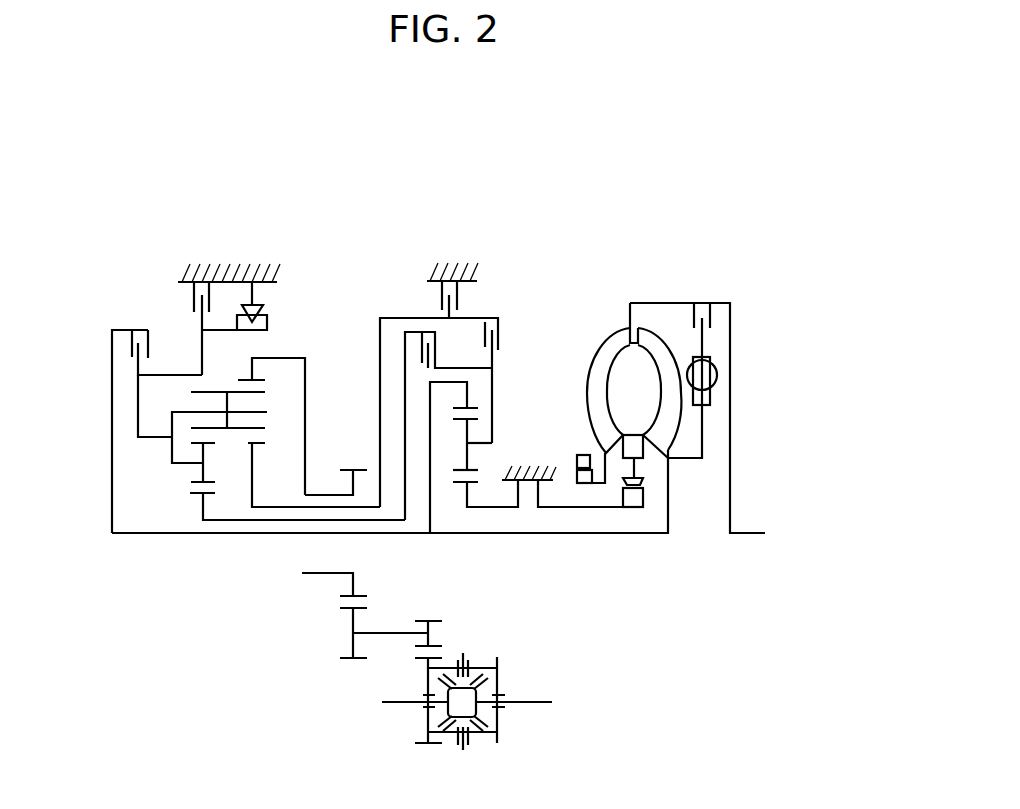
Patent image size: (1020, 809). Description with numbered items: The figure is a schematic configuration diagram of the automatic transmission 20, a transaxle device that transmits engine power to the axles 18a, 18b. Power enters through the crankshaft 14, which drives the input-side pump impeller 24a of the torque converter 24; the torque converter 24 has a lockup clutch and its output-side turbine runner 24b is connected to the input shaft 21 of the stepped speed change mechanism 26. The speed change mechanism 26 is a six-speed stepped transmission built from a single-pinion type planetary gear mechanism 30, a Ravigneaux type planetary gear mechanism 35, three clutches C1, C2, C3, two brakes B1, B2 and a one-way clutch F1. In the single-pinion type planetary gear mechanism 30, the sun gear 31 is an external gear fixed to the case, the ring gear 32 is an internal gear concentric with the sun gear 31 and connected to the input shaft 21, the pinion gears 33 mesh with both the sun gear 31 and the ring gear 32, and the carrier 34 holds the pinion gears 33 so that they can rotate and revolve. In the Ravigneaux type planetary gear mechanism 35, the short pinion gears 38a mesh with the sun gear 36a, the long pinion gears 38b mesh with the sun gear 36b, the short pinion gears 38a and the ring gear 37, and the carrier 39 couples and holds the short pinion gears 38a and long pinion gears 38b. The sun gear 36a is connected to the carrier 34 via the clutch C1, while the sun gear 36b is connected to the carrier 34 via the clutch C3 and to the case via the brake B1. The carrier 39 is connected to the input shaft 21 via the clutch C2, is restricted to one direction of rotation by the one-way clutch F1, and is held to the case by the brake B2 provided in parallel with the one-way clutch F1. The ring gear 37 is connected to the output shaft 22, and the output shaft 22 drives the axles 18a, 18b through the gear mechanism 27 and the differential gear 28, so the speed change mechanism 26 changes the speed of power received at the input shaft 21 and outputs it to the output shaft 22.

The automatic transmission 20 is at (740, 220).
The crankshaft 14 is at (755, 530).
The torque converter 24 is at (624, 264).
The pump impeller 24a is at (612, 328).
The turbine runner 24b is at (642, 327).
The input shaft 21 is at (635, 535).
The speed change mechanism 26 is at (411, 219).
The Ravigneaux type planetary gear mechanism 35 is at (195, 546).
The clutch C2 is at (140, 328).
The brake B2 is at (204, 280).
The one-way clutch F1 is at (258, 300).
The carrier 39 is at (150, 435).
The long pinion gears 38b is at (236, 390).
The ring gear 37 is at (262, 377).
The short pinion gears 38a is at (210, 480).
The sun gear 36b is at (259, 445).
The sun gear 36a is at (197, 497).
The output shaft 22 is at (325, 495).
The single-pinion type planetary gear mechanism 30 is at (519, 352).
The brake B1 is at (452, 280).
The clutch C3 is at (487, 322).
The clutch C1 is at (422, 331).
The ring gear 32 is at (480, 408).
The carrier 34 is at (493, 443).
The pinion gears 33 is at (456, 468).
The sun gear 31 is at (458, 485).
The gear mechanism 27 is at (396, 612).
The differential gear 28 is at (466, 673).
The axle 18a is at (527, 698).
The axle 18b is at (402, 698).